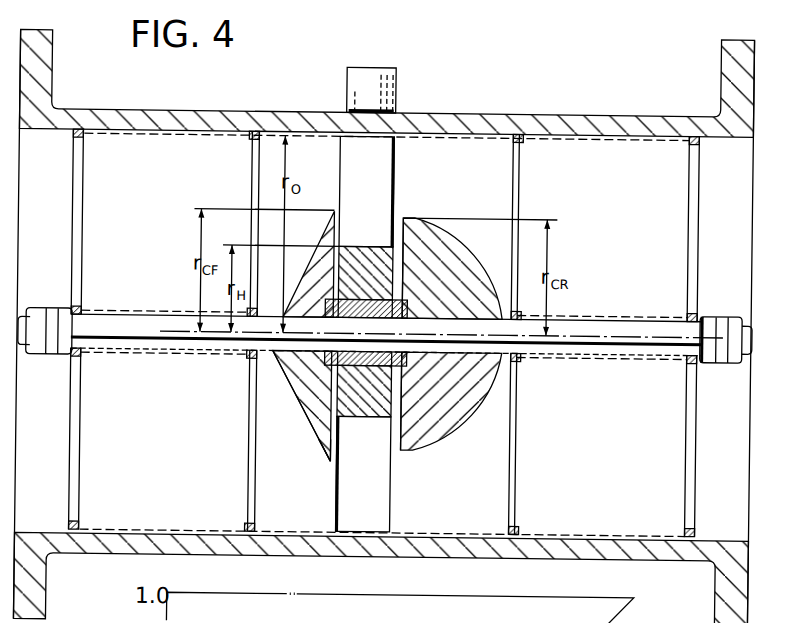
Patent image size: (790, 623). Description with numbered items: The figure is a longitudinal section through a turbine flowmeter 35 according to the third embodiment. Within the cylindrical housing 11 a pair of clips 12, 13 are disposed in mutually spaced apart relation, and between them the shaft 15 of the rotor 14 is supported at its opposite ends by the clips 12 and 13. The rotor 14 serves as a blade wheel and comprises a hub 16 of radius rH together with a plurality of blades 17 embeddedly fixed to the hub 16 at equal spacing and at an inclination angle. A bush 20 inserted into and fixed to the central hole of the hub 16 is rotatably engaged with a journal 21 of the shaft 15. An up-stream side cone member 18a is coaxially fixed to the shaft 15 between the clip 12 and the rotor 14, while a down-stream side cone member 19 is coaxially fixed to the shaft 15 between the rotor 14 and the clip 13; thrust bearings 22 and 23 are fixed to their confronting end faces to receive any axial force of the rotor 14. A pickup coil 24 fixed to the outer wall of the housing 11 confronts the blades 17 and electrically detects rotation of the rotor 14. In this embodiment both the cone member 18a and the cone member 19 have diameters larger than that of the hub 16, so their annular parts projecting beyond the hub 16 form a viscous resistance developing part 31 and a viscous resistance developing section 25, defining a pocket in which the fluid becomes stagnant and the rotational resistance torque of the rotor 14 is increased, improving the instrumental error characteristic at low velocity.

The cylindrical housing 11 is at (543, 113).
The clip 12 is at (71, 245).
The clip 13 is at (694, 237).
The rotor 14 is at (406, 211).
The shaft 15 is at (153, 322).
The hub 16 is at (346, 420).
The blades 17 is at (384, 168).
The up-stream side cone member 18a is at (310, 409).
The down-stream side cone member 19 is at (479, 401).
The bush 20 is at (361, 297).
The journal 21 is at (373, 419).
The thrust bearing 22 is at (290, 368).
The thrust bearing 23 is at (407, 362).
The pickup coil 24 is at (393, 85).
The viscous resistance developing section 25 is at (396, 431).
The viscous resistance developing part 31 is at (322, 447).
The turbine flowmeter 35 is at (252, 84).